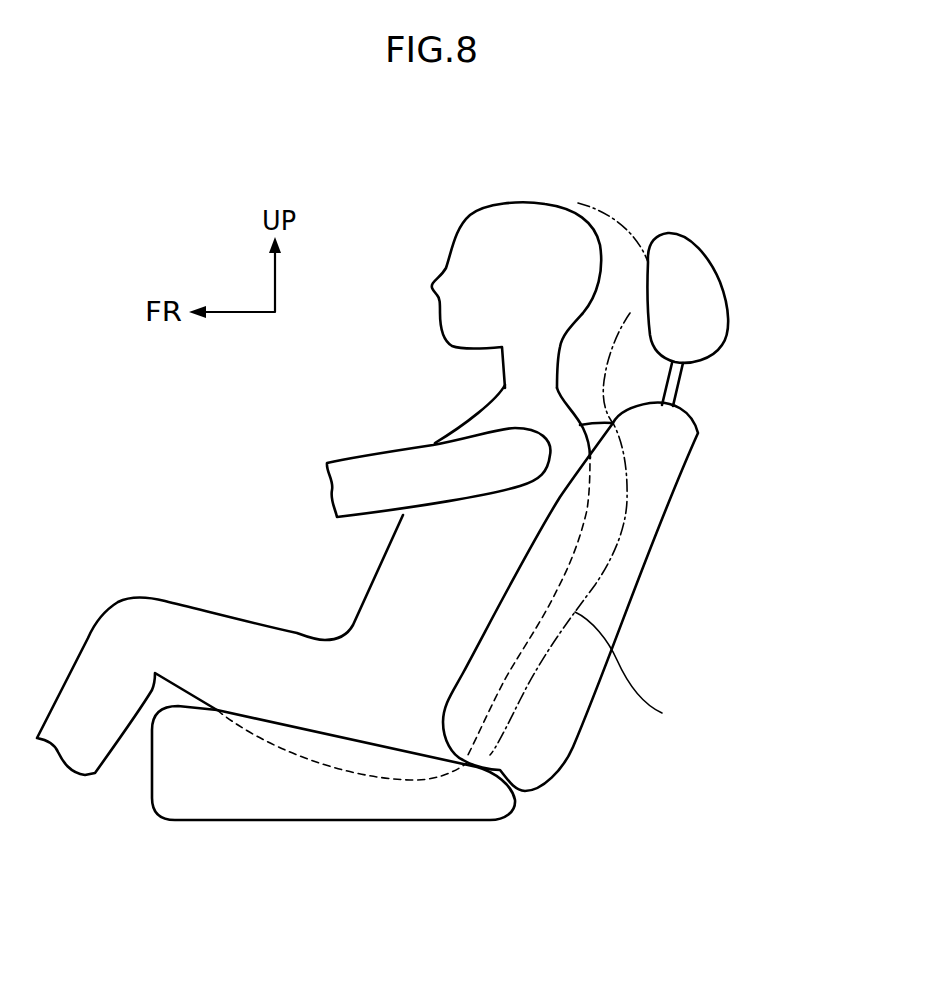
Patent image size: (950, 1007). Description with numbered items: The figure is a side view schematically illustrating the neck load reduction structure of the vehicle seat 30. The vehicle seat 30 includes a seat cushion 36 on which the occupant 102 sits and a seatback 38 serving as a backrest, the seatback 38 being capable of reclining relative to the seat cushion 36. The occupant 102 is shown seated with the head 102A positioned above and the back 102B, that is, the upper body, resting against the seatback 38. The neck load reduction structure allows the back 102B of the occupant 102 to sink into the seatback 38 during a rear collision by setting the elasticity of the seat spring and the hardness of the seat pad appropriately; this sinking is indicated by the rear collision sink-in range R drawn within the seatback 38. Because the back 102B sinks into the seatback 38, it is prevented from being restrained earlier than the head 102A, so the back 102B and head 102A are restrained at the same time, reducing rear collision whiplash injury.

The vehicle seat 30 is at (753, 287).
The seat cushion 36 is at (375, 808).
The seatback 38 is at (640, 552).
The occupant 102 is at (375, 420).
The head 102A is at (527, 203).
The back 102B is at (613, 425).
The rear collision sink-in range R is at (629, 671).